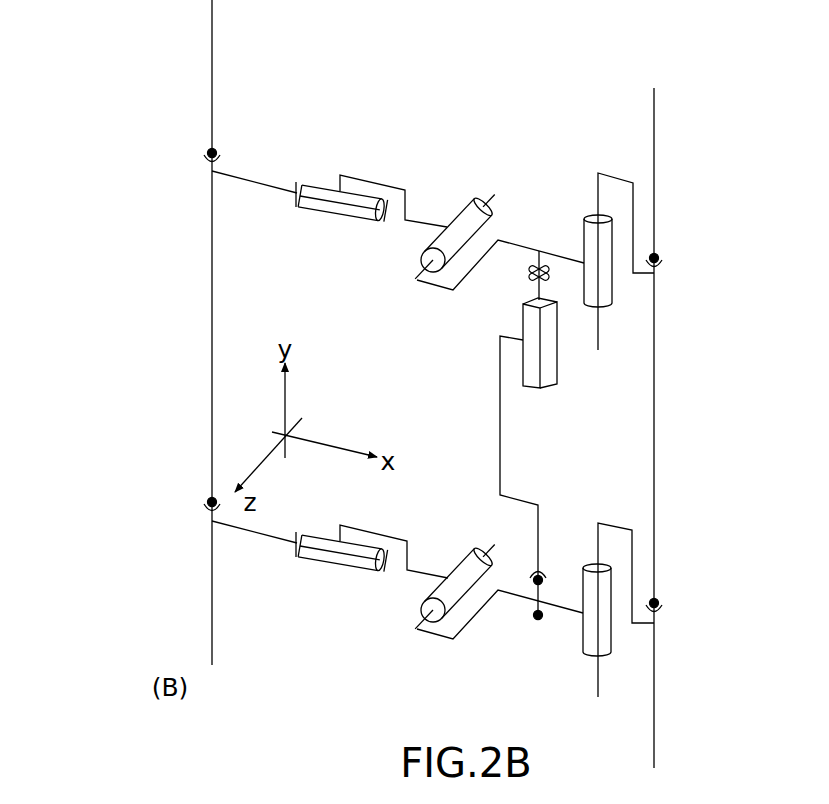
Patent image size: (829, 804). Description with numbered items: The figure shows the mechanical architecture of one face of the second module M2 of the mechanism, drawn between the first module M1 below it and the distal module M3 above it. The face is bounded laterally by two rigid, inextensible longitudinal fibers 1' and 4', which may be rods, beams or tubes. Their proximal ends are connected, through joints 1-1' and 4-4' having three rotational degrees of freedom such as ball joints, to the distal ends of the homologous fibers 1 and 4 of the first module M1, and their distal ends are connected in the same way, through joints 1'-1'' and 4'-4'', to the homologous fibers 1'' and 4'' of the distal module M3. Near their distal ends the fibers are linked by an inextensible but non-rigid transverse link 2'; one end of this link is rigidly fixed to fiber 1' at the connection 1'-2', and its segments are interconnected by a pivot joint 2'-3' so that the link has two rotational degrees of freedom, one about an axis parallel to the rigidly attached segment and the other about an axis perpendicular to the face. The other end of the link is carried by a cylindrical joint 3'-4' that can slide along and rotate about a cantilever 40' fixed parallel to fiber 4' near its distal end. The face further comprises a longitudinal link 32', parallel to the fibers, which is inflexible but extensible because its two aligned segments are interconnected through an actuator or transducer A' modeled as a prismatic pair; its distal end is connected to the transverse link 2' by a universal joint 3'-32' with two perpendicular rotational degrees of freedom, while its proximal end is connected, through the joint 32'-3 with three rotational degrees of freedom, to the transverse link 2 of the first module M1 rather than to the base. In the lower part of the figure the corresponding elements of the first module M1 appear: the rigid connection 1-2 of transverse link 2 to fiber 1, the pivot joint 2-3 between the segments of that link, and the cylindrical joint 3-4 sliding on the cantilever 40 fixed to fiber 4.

The longitudinal fiber 1 is at (254, 585).
The longitudinal fiber 1' is at (238, 328).
The longitudinal fiber 1'' is at (193, 75).
The joint 1-1' is at (185, 503).
The joint 1'-1'' is at (178, 153).
The rigid connection 1-2 is at (342, 566).
The rigid connection 1'-2' is at (342, 222).
The transverse link 2 is at (394, 527).
The transverse link 2' is at (393, 160).
The pivot joint 2-3 is at (454, 586).
The pivot joint 2'-3' is at (454, 235).
The cylindrical joint 3-4 is at (578, 633).
The cylindrical joint 3'-4' is at (500, 233).
The universal joint 3'-32' is at (487, 295).
The longitudinal link 32' is at (498, 475).
The joint 32'-3 is at (567, 551).
The actuator or transducer A' is at (551, 367).
The longitudinal fiber 4 is at (637, 634).
The longitudinal fiber 4' is at (640, 372).
The longitudinal fiber 4'' is at (672, 171).
The joint 4-4' is at (683, 616).
The joint 4'-4'' is at (689, 258).
The cantilever 40 is at (612, 635).
The cantilever 40' is at (615, 285).
The first module M1 is at (200, 610).
The second module M2 is at (198, 337).
The distal module M3 is at (198, 62).